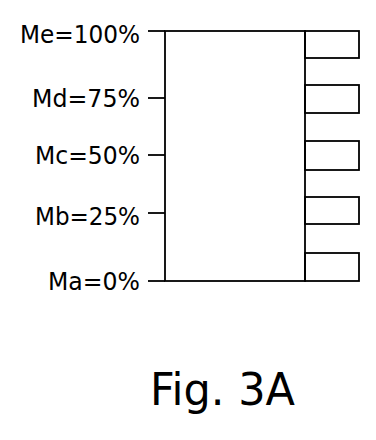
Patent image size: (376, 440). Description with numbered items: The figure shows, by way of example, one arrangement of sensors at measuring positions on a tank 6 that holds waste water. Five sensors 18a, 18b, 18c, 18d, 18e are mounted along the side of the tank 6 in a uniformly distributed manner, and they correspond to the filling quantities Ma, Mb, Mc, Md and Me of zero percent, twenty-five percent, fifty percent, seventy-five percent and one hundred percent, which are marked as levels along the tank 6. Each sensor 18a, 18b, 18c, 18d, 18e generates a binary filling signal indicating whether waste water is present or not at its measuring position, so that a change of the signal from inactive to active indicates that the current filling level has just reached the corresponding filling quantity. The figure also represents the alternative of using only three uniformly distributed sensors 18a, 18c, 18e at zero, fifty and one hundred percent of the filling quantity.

The tank 6 is at (227, 166).
The sensor 18a is at (353, 279).
The sensor 18b is at (353, 222).
The sensor 18c is at (353, 168).
The sensor 18d is at (353, 111).
The sensor 18e is at (353, 56).